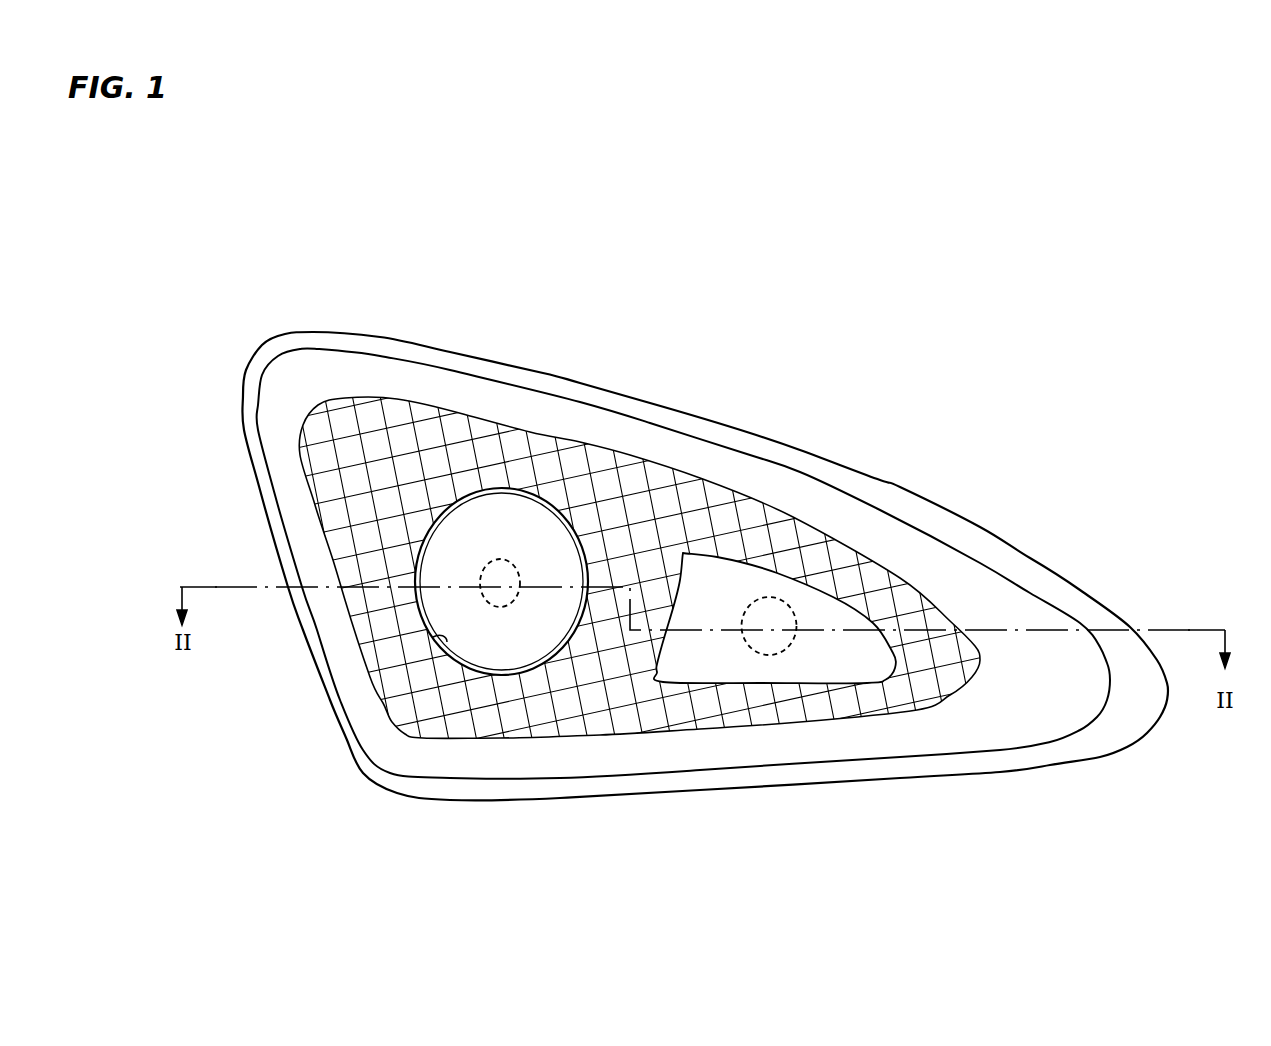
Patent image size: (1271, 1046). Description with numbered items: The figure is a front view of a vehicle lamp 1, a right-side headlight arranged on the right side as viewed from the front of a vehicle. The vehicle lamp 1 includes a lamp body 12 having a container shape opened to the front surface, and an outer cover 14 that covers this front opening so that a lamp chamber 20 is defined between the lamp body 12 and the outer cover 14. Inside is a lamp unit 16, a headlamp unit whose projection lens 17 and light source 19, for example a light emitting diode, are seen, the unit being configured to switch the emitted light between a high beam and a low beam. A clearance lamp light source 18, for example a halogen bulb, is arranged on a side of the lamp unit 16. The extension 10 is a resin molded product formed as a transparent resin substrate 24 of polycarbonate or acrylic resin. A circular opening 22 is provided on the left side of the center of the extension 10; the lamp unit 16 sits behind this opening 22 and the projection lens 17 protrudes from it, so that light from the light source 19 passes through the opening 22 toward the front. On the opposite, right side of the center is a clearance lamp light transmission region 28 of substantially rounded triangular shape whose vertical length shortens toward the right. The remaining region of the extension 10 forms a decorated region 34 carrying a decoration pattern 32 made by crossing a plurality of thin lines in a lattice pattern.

The vehicle lamp 1 is at (808, 318).
The extension 10 is at (655, 463).
The lamp body 12 is at (543, 372).
The outer cover 14 is at (436, 366).
The lamp unit 16 is at (475, 688).
The projection lens 17 is at (447, 639).
The clearance lamp light source 18 is at (795, 650).
The light source 19 is at (510, 607).
The lamp chamber 20 is at (281, 401).
The circular opening 22 is at (437, 645).
The transparent resin substrate 24 is at (655, 463).
The clearance lamp light transmission region 28 is at (883, 683).
The decoration pattern 32 is at (820, 517).
The decorated region 34 is at (873, 560).